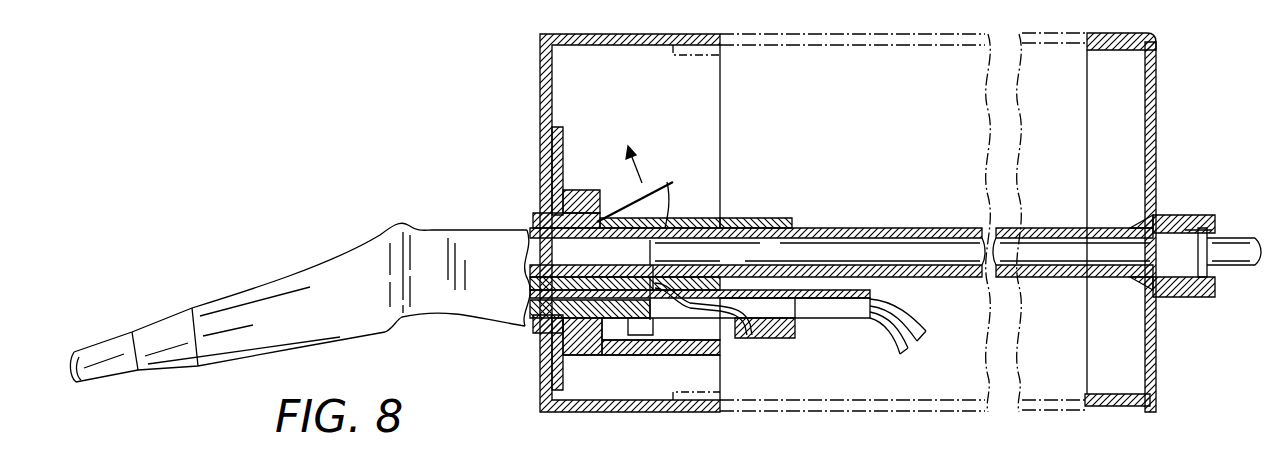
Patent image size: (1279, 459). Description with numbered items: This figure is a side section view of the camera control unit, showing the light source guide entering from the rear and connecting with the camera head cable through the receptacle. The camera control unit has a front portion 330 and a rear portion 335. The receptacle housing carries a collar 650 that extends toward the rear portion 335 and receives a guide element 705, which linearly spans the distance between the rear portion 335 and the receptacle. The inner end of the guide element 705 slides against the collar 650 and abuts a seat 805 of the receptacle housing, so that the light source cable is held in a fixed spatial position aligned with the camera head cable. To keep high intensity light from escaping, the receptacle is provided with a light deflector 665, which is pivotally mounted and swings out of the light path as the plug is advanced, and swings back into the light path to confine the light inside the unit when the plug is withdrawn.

The front portion 330 is at (538, 101).
The rear portion 335 is at (1156, 168).
The collar 650 is at (768, 226).
The light deflector 665 is at (666, 181).
The guide element 705 is at (870, 228).
The seat 805 is at (746, 220).